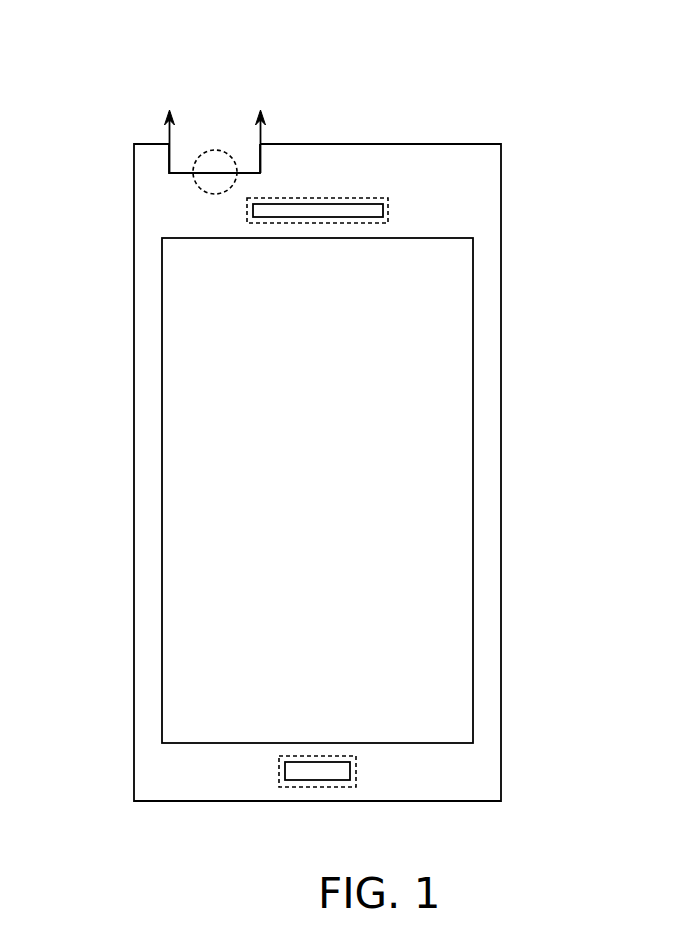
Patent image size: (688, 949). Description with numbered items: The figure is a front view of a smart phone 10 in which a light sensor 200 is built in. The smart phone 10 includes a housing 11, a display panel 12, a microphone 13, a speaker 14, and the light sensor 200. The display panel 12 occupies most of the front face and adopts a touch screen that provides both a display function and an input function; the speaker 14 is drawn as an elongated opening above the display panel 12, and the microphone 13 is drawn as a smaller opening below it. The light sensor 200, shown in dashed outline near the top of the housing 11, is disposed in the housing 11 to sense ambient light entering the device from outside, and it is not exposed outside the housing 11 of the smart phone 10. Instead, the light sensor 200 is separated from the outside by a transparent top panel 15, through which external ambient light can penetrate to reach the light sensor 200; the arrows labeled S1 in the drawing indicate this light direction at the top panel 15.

The smart phone 10 is at (95, 36).
The housing 11 is at (491, 228).
The display panel 12 is at (447, 322).
The microphone 13 is at (357, 771).
The speaker 14 is at (318, 197).
The transparent top panel 15 is at (236, 171).
The light sensor 200 is at (215, 163).
The radiated signal S1 is at (211, 128).